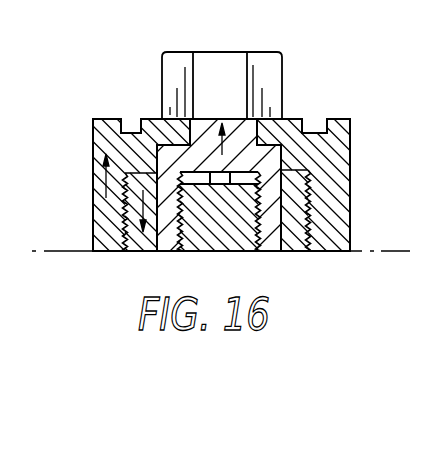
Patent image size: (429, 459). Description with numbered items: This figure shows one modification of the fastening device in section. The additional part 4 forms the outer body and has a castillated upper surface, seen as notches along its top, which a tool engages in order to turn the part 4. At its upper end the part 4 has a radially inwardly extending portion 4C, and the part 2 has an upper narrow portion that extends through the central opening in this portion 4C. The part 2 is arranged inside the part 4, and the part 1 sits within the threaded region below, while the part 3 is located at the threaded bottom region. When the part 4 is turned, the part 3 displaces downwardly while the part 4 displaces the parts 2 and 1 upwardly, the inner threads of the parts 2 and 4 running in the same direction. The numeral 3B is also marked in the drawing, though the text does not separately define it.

The part 1 is at (233, 230).
The part 2 is at (190, 118).
The part 3 is at (297, 225).
The bolt passage 3B is at (228, 119).
The additional part 4 is at (334, 170).
The upper radially inwardly extending portion 4C is at (280, 117).